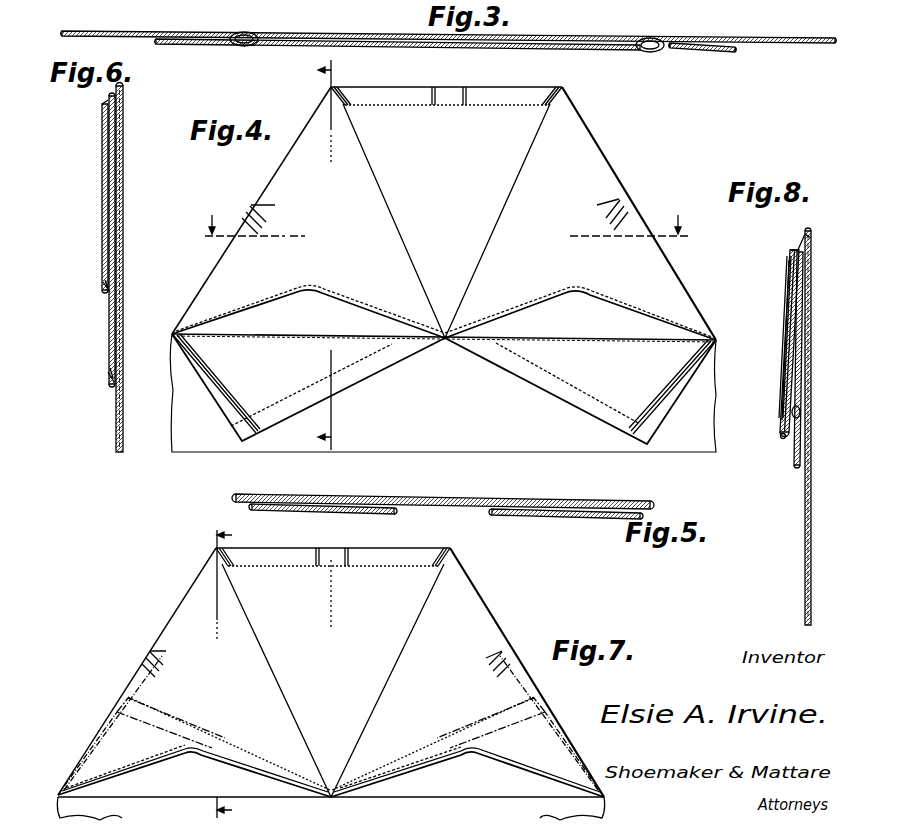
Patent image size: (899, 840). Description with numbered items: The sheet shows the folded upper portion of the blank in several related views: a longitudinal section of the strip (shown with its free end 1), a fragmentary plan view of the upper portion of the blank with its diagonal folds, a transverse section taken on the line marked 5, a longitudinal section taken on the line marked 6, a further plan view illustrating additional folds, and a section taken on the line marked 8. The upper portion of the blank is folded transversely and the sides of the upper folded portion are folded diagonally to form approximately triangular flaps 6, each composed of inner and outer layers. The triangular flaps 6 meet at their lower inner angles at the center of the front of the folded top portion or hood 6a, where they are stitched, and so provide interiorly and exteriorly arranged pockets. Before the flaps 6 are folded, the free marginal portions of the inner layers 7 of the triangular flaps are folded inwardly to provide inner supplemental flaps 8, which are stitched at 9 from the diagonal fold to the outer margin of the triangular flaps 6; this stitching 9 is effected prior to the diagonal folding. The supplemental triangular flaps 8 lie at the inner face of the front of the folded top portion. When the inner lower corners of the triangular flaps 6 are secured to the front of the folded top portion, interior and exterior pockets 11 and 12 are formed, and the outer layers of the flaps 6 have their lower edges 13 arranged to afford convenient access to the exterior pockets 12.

In FIG. 3, the sheet body / strip 1 is at (612, 34).
In FIG. 6, the sheet body / strip 1 is at (122, 256).
In FIG. 4, the sheet body / strip 1 is at (434, 446).
In FIG. 8, the sheet body / strip 1 is at (812, 596).
In FIG. 7, the sheet body / strip 1 is at (404, 822).
In FIG. 4, the section line 5 is at (447, 217).
In FIG. 6, the triangular flap 6 is at (96, 176).
In FIG. 4, the triangular flap 6 is at (520, 176).
In FIG. 8, the triangular flap 6 is at (784, 342).
In FIG. 5, the triangular flap 6 is at (358, 508).
In FIG. 7, the triangular flap 6 is at (194, 693).
In FIG. 3, the hood 6a is at (597, 48).
In FIG. 6, the hood 6a is at (96, 221).
In FIG. 4, the hood 6a is at (446, 108).
In FIG. 5, the hood 6a is at (484, 510).
In FIG. 6, the inner layer 7 is at (104, 140).
In FIG. 4, the inner layer 7 is at (283, 326).
In FIG. 8, the inner layer 7 is at (784, 388).
In FIG. 5, the inner layer 7 is at (332, 506).
In FIG. 6, the inner supplemental flap 8 is at (106, 350).
In FIG. 4, the inner supplemental flap 8 is at (345, 352).
In FIG. 8, the inner supplemental flap 8 is at (802, 462).
In FIG. 7, the inner supplemental flap 8 is at (274, 673).
In FIG. 3, the stitching 9 is at (247, 47).
In FIG. 8, the stitching 9 is at (802, 406).
In FIG. 7, the stitching 9 is at (196, 728).
In FIG. 8, the interior pocket 11 is at (793, 310).
In FIG. 5, the interior pocket 11 is at (352, 496).
In FIG. 7, the interior pocket 11 is at (272, 664).
In FIG. 8, the exterior pocket 12 is at (781, 438).
In FIG. 5, the exterior pocket 12 is at (386, 512).
In FIG. 7, the exterior pocket 12 is at (152, 766).
In FIG. 4, the lower edge 13 is at (325, 282).
In FIG. 7, the lower edge 13 is at (212, 752).